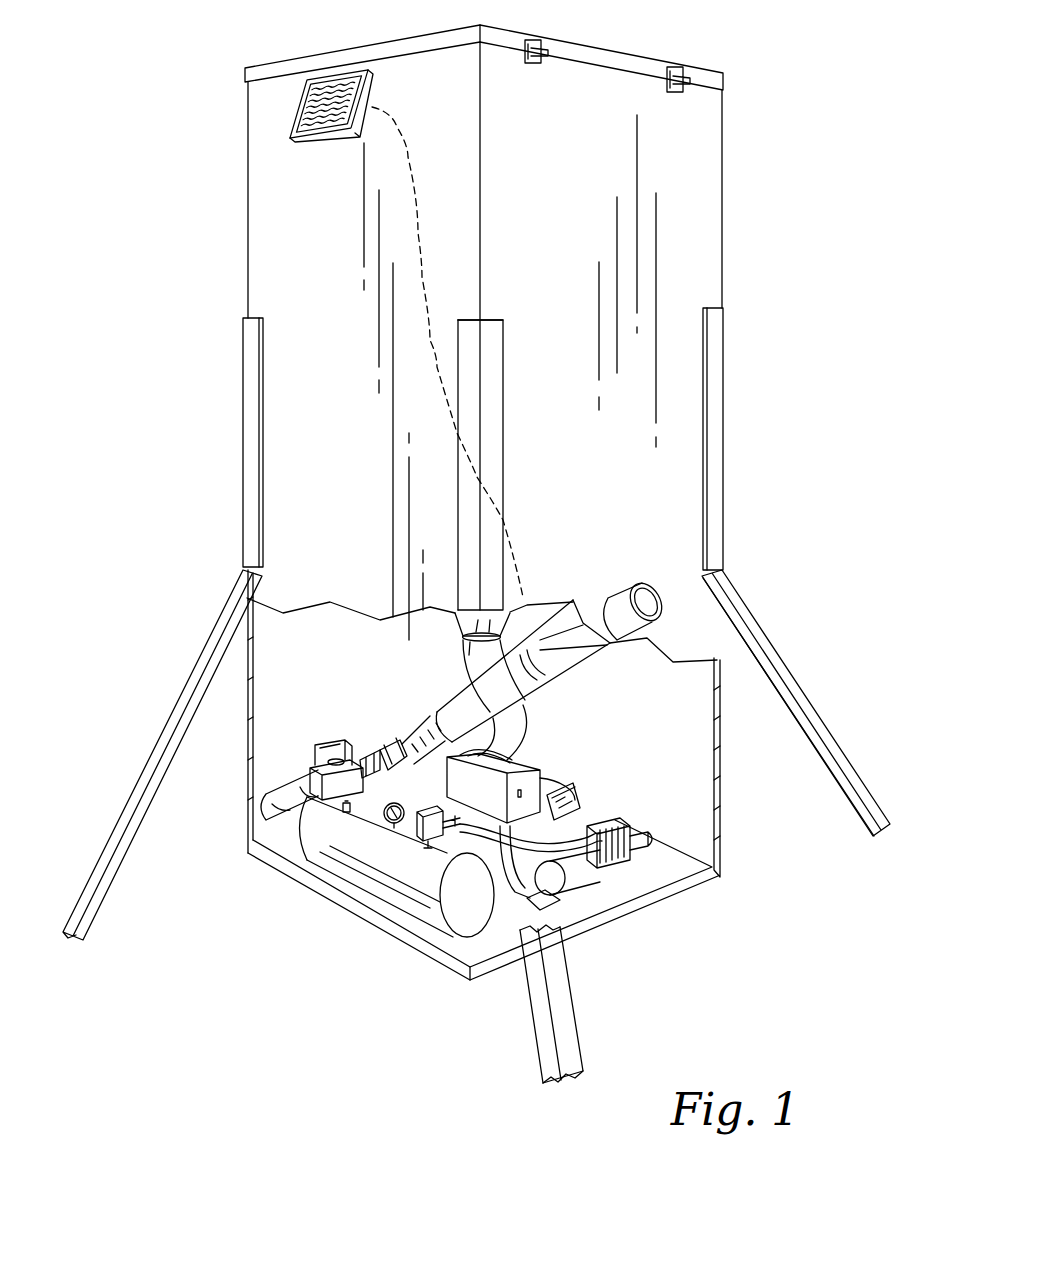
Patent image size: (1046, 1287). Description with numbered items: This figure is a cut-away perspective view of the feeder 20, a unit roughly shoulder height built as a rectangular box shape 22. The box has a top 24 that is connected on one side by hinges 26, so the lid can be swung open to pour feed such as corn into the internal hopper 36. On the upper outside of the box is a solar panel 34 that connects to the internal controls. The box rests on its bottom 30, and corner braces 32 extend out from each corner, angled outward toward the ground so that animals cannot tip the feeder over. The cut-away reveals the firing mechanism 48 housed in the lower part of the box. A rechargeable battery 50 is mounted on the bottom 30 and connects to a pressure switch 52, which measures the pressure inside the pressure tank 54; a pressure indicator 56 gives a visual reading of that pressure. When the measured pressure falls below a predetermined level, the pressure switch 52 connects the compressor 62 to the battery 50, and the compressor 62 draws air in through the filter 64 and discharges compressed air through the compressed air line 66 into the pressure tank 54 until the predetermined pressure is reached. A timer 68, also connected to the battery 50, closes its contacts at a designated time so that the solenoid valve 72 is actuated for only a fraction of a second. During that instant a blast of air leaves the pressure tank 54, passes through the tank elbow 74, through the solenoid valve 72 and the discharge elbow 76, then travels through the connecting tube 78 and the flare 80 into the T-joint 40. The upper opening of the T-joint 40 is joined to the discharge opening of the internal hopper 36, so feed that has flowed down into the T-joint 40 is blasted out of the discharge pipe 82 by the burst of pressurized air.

The feeder 20 is at (800, 90).
The rectangular box shape 22 is at (594, 187).
The top 24 is at (405, 38).
The hinges 26 is at (549, 47).
The bottom 30 is at (657, 900).
The corner braces 32 is at (169, 730).
The solar panel 34 is at (306, 96).
The internal hopper 36 is at (457, 625).
The T-joint 40 is at (477, 687).
The firing mechanism 48 is at (620, 744).
The rechargeable battery 50 is at (537, 780).
The pressure switch 52 is at (425, 827).
The pressure tank 54 is at (362, 862).
The pressure indicator 56 is at (387, 822).
The compressor 62 is at (586, 878).
The filter 64 is at (652, 843).
The compressed air line 66 is at (571, 837).
The timer 68 is at (581, 800).
The solenoid valve 72 is at (315, 770).
The tank elbow 74 is at (292, 793).
The discharge elbow 76 is at (363, 760).
The connecting tube 78 is at (399, 752).
The flare 80 is at (427, 717).
The discharge pipe 82 is at (617, 603).